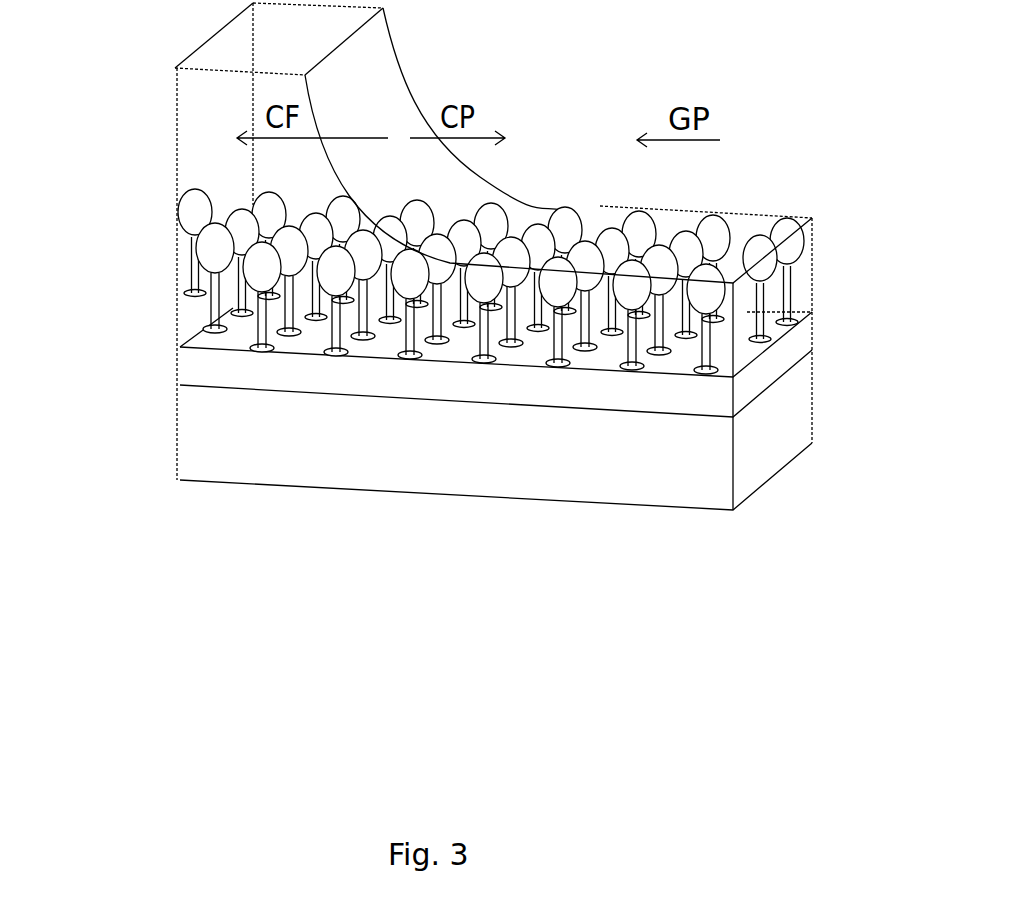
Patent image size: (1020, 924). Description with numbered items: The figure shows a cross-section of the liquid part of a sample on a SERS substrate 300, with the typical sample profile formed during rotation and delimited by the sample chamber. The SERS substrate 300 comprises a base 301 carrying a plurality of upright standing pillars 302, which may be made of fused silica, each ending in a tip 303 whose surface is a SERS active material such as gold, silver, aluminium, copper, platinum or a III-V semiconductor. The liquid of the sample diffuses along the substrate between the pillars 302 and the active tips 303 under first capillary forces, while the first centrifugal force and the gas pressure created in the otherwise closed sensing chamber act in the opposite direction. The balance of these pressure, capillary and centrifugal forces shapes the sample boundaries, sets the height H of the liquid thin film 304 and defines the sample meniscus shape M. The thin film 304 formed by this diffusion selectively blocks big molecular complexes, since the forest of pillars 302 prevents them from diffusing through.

The SERS substrate 300 is at (168, 298).
The base 301 is at (783, 360).
The upright standing pillars 302 is at (553, 345).
The tips 303 is at (575, 215).
The thin film 304 is at (783, 233).
The sample meniscus shape M is at (405, 122).
The height of the liquid part thin film H is at (812, 253).